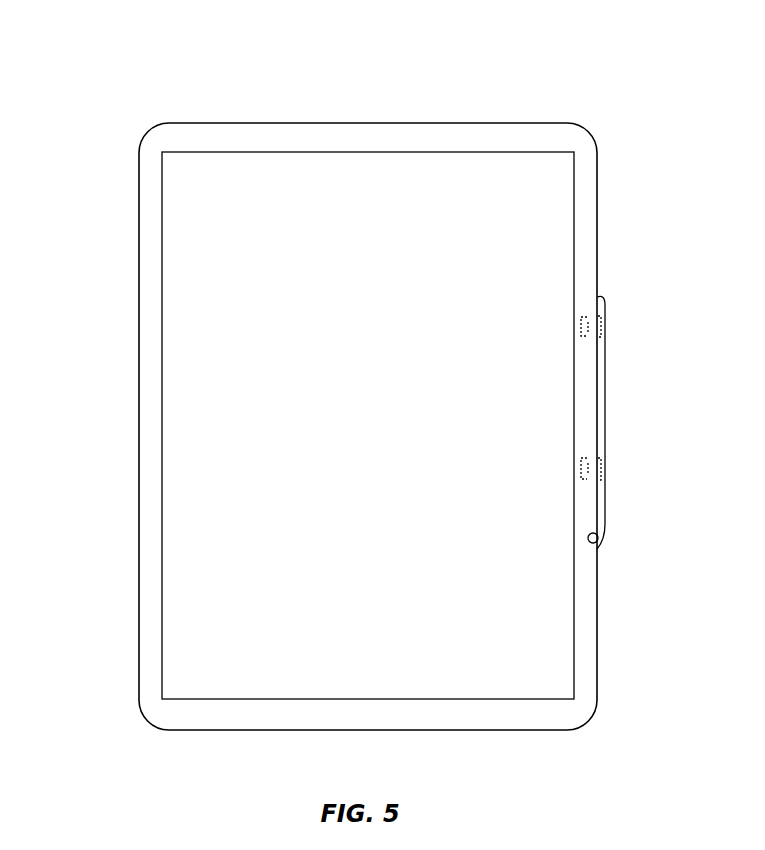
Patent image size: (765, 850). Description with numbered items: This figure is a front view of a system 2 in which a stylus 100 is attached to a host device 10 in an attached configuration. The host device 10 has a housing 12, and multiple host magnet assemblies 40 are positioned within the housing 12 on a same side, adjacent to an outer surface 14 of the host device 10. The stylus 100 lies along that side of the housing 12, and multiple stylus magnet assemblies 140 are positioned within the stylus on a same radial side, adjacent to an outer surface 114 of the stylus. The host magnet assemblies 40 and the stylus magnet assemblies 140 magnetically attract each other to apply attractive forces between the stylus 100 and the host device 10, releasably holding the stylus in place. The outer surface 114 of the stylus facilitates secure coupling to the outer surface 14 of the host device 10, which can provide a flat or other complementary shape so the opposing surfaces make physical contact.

The system 2 is at (17, 118).
The host device 10 is at (208, 123).
The housing 12 is at (585, 190).
The outer surface 14 is at (597, 253).
The host magnet assemblies 40 is at (578, 336).
The stylus 100 is at (603, 305).
The outer surface 114 is at (597, 547).
The stylus magnet assemblies 140 is at (601, 333).